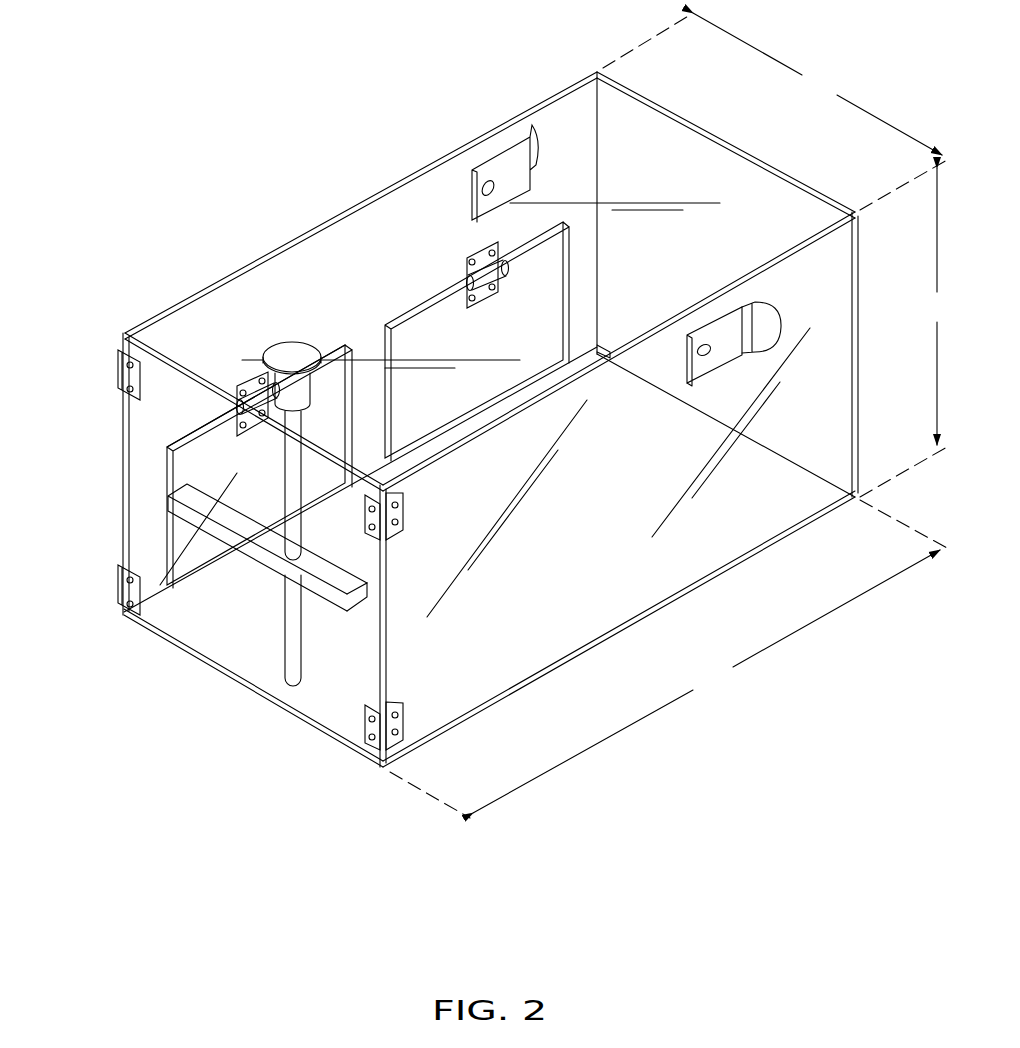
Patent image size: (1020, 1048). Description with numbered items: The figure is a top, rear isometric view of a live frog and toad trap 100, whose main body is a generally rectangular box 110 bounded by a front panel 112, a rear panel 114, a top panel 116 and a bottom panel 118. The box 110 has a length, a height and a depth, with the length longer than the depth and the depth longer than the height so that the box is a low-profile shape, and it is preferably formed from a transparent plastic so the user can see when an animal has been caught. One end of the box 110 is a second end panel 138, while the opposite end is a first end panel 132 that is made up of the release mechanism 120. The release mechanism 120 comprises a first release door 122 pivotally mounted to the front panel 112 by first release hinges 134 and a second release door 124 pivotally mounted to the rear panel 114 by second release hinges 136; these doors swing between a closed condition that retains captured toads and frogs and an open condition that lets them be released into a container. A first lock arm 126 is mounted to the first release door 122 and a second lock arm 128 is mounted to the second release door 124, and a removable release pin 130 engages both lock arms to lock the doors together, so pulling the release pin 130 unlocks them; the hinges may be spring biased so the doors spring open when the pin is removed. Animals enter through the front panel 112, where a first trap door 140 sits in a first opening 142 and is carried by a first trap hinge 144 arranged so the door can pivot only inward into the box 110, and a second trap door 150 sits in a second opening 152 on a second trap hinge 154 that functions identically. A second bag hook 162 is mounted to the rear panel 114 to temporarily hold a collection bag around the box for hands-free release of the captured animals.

The trap 100 is at (218, 115).
The box 110 is at (597, 68).
The front panel 112 is at (275, 248).
The rear panel 114 is at (563, 618).
The top panel 116 is at (682, 157).
The bottom panel 118 is at (478, 718).
The release mechanism 120 is at (114, 668).
The first release door 122 is at (200, 640).
The second release door 124 is at (348, 742).
The first lock arm 126 is at (197, 498).
The second lock arm 128 is at (358, 547).
The release pin 130 is at (289, 503).
The first end panel 132 is at (98, 626).
The first release hinges 134 is at (122, 375).
The second release hinges 136 is at (400, 515).
The second end panel 138 is at (803, 218).
The first trap door 140 is at (518, 325).
The first opening 142 is at (480, 247).
The first trap hinge 144 is at (408, 303).
The second trap door 150 is at (197, 457).
The second opening 152 is at (193, 428).
The second trap hinge 154 is at (257, 395).
The second bag hook 162 is at (780, 318).